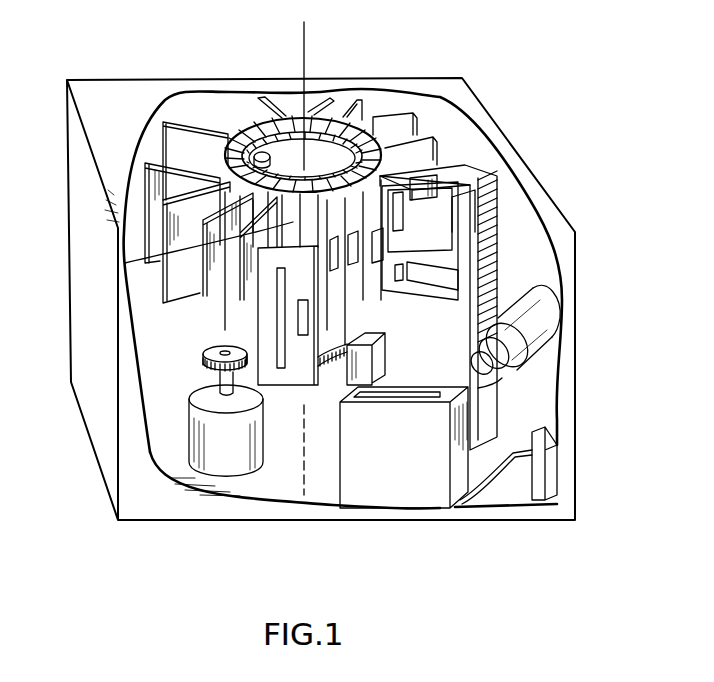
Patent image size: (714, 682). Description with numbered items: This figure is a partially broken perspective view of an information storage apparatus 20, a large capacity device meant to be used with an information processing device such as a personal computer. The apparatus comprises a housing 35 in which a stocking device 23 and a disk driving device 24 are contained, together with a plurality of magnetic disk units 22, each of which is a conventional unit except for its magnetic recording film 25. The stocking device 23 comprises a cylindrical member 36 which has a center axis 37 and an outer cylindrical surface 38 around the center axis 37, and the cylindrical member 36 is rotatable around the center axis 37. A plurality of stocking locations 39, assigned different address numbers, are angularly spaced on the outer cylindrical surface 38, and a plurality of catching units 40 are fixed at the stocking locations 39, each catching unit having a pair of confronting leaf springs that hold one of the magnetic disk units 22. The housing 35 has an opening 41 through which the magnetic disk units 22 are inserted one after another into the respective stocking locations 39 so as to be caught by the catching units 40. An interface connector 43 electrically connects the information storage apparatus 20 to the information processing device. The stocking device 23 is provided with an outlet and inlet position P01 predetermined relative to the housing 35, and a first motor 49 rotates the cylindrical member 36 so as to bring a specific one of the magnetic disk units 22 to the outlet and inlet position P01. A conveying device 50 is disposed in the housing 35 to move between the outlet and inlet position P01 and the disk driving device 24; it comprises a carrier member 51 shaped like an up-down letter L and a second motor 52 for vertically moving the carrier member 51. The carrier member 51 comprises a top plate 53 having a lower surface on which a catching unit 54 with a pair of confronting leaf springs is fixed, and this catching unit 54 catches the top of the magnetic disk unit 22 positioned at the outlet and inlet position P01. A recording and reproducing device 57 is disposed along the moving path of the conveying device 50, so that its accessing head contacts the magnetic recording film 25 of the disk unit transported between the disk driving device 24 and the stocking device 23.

The information storage apparatus 20 is at (106, 508).
The magnetic disk units 22 is at (182, 117).
The stocking device 23 is at (334, 114).
The disk driving device 24 is at (398, 496).
The magnetic recording film 25 is at (404, 226).
The housing 35 is at (122, 79).
The cylindrical member 36 is at (268, 125).
The center axis 37 is at (308, 66).
The outer cylindrical surface 38 is at (125, 263).
The stocking locations 39 is at (235, 190).
The catching units 40 is at (358, 263).
The opening 41 is at (282, 370).
The interface connector 43 is at (551, 468).
The first motor 49 is at (236, 455).
The conveying device 50 is at (508, 281).
The carrier member 51 is at (497, 176).
The second motor 52 is at (547, 327).
The top plate 53 is at (465, 165).
The catching unit 54 is at (425, 178).
The recording and reproducing device 57 is at (385, 354).
The outlet and inlet position P01 is at (445, 297).